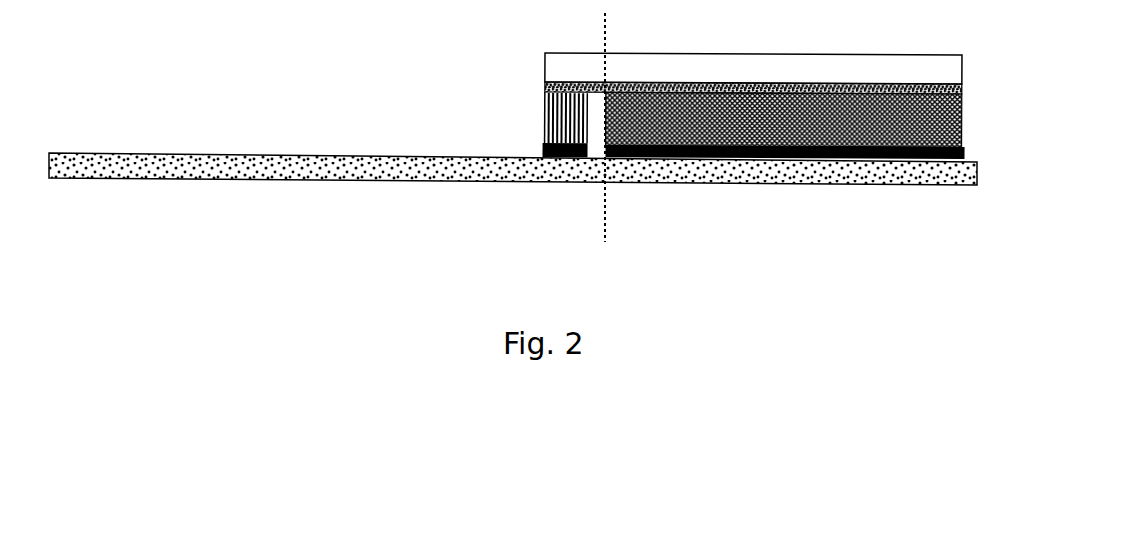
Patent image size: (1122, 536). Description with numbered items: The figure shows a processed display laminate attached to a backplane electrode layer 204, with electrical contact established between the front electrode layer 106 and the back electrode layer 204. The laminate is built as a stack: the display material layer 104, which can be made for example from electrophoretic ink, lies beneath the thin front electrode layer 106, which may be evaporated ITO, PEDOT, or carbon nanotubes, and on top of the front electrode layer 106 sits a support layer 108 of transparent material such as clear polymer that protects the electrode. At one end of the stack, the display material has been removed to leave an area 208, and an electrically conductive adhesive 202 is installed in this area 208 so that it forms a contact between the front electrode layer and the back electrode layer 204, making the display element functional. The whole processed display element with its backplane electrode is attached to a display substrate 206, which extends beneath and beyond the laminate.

The display material layer 104 is at (958, 128).
The front electrode layer 106 is at (958, 92).
The support layer 108 is at (955, 70).
The electrically conductive adhesive 202 is at (548, 157).
The backplane electrode layer 204 is at (662, 158).
The display substrate 206 is at (838, 168).
The area where the display material was removed 208 is at (577, 103).